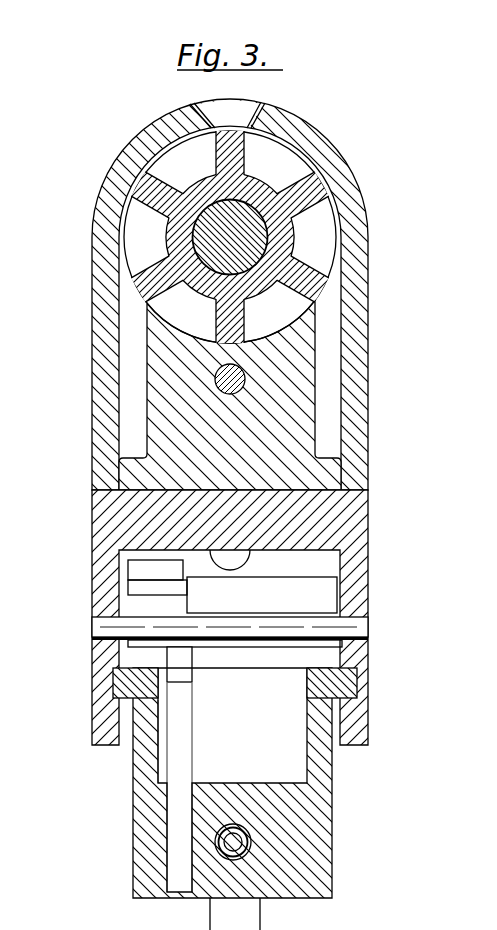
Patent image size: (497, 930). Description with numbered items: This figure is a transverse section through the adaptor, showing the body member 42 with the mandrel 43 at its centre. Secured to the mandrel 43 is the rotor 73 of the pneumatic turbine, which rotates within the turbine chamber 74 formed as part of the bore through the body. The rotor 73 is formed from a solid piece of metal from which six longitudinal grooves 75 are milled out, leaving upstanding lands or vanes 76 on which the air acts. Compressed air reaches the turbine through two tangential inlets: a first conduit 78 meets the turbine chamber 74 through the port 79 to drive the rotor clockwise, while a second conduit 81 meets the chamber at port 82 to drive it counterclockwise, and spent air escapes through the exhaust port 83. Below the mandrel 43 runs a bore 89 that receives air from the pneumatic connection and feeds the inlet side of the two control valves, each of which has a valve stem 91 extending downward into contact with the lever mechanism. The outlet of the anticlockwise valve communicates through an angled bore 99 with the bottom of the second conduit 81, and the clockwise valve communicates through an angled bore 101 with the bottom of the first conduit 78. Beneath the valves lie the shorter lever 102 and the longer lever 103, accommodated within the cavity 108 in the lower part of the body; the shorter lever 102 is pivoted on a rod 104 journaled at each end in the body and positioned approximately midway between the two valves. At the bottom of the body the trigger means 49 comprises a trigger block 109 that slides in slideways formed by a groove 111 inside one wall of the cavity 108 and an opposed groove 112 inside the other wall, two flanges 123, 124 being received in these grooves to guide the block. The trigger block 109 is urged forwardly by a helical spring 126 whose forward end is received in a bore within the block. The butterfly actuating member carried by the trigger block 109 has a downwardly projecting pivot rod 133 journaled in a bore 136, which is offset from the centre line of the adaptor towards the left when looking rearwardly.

The body member 42 is at (373, 413).
The mandrel 43 is at (260, 238).
The trigger means 49 is at (245, 783).
The rotor 73 is at (274, 177).
The turbine chamber 74 is at (301, 139).
The longitudinal grooves 75 is at (173, 160).
The lands or vanes 76 is at (140, 186).
The first conduit 78 is at (335, 345).
The port 79 is at (327, 291).
The second conduit 81 is at (130, 325).
The port 82 is at (132, 292).
The exhaust port 83 is at (250, 104).
The bore 89 is at (233, 366).
The valve stem 91 is at (246, 563).
The angled bore 99 is at (124, 451).
The angled bore 101 is at (312, 452).
The shorter lever 102 is at (330, 592).
The longer lever 103 is at (138, 573).
The rod 104 is at (357, 627).
The cavity 108 is at (308, 546).
The trigger block 109 is at (307, 850).
The groove 111 is at (343, 698).
The groove 112 is at (118, 698).
The flange 123 is at (333, 680).
The flange / trigger 124 is at (113, 680).
The helical spring 126 is at (236, 830).
The pivot rod 133 is at (178, 857).
The bore 136 is at (165, 822).